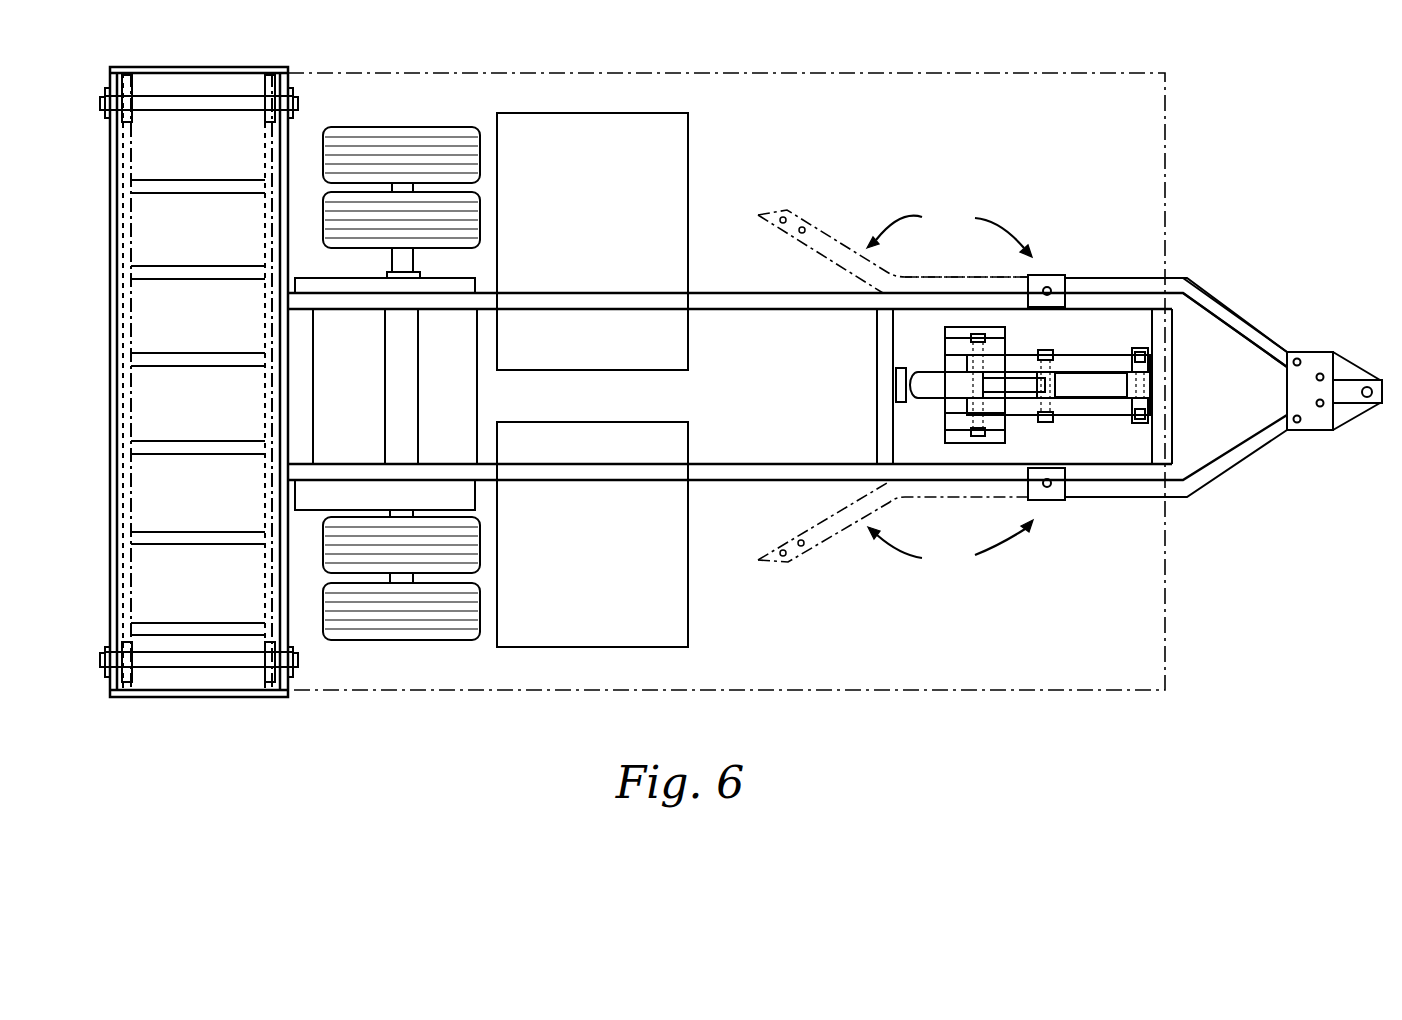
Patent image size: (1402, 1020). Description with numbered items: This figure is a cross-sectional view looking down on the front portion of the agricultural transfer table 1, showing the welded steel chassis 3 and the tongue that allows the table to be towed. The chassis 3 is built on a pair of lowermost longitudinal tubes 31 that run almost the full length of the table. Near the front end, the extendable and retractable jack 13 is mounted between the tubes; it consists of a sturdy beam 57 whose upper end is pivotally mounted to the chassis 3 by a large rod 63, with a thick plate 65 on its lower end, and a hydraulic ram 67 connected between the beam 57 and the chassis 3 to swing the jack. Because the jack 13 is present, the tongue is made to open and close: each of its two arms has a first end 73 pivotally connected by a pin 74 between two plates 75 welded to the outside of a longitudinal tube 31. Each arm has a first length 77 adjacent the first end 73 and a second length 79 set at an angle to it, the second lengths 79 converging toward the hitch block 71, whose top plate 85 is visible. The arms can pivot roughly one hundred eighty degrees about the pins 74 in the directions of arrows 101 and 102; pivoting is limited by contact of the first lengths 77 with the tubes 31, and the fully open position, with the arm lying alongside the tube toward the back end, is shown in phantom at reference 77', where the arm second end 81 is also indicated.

The agricultural transfer table 1 is at (1200, 262).
The chassis 3 is at (745, 494).
The jack 13 is at (932, 347).
The lowermost longitudinal tubes 31 is at (767, 302).
The beam 57 is at (1113, 363).
The rod 63 is at (1150, 387).
The plate 65 is at (995, 333).
The hydraulic ram 67 is at (935, 400).
The hitch block 71 is at (1312, 436).
The arm first end 73 is at (1005, 277).
The pin 74 is at (1047, 276).
The plates 75 is at (1050, 498).
The arm first length 77 is at (1176, 272).
The arm first length in fully open position 77' is at (1096, 488).
The arm second length 79 is at (1247, 328).
The arm second end 81 is at (770, 560).
The hitch block top plate 85 is at (1300, 382).
The arrow 101 is at (902, 222).
The arrow 102 is at (1007, 230).